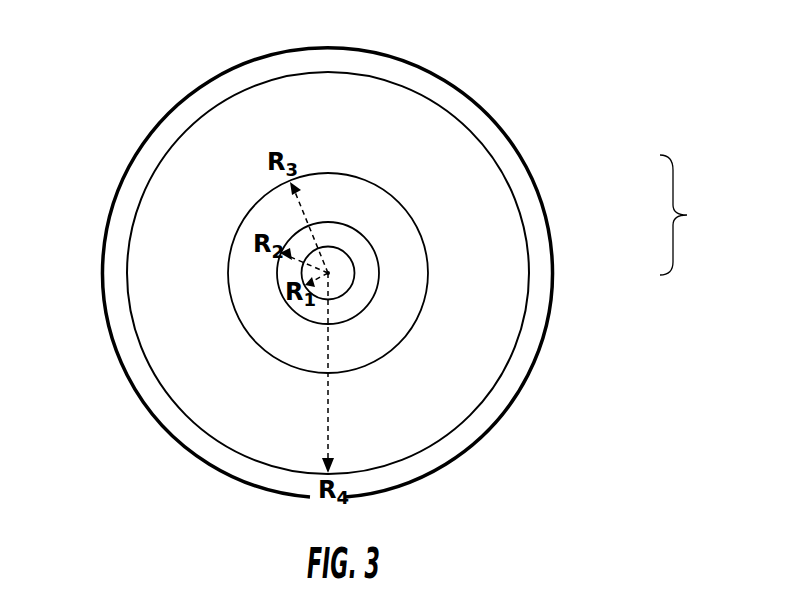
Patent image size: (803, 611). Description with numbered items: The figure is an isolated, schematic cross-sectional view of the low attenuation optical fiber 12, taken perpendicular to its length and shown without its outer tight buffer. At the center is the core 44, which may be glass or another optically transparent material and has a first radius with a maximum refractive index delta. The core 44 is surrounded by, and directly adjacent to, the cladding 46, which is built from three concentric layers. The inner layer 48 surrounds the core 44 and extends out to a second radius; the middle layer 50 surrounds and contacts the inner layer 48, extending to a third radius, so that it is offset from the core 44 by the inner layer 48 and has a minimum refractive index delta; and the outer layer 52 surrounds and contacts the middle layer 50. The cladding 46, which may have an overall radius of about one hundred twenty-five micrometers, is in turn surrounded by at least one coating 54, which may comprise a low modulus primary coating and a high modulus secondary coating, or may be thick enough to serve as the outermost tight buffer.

The low attenuation optical fiber 12 is at (555, 132).
The core 44 is at (337, 281).
The cladding 46 is at (688, 215).
The inner layer 48 is at (370, 280).
The middle layer 50 is at (400, 242).
The outer layer 52 is at (458, 207).
The coating 54 is at (128, 362).